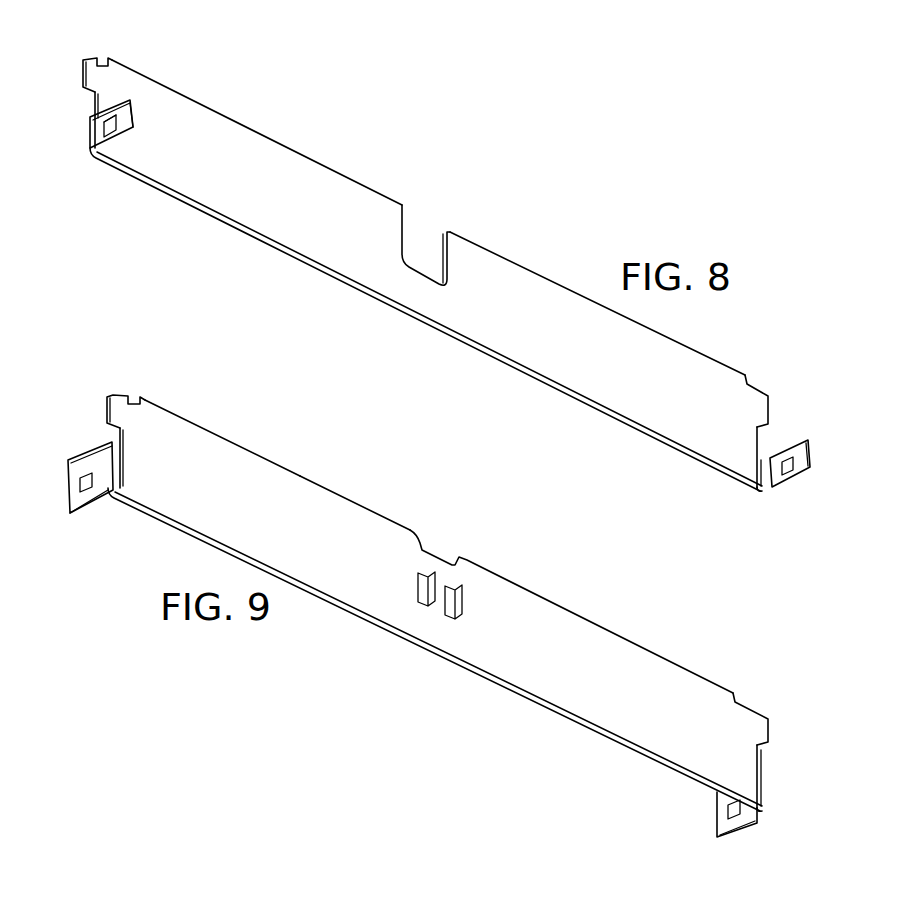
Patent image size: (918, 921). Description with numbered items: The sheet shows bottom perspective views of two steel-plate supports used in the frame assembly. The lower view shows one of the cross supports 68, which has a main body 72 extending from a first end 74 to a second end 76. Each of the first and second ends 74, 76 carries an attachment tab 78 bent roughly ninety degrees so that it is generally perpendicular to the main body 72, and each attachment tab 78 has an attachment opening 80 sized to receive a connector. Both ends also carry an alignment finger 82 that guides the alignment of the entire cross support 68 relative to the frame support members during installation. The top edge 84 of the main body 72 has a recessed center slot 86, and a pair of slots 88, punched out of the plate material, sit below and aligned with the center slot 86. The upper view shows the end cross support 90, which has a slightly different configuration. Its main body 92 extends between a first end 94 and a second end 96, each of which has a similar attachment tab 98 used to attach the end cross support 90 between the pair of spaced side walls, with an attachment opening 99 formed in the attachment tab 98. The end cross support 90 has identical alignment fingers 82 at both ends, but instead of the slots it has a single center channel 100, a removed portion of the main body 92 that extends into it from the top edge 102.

In FIG. 9, the cross support 68 is at (542, 582).
In FIG. 9, the main body 72 is at (240, 463).
In FIG. 9, the first end 74 is at (110, 427).
In FIG. 9, the second end 76 is at (763, 775).
In FIG. 9, the attachment tab 78 is at (95, 513).
In FIG. 9, the attachment opening 80 is at (72, 485).
In FIG. 8, the alignment finger 82 is at (100, 66).
In FIG. 9, the alignment finger 82 is at (122, 405).
In FIG. 9, the top edge 84 is at (345, 496).
In FIG. 9, the recessed center slot 86 is at (442, 558).
In FIG. 9, the slots 88 is at (415, 588).
In FIG. 8, the end cross support 90 is at (474, 203).
In FIG. 8, the main body 92 is at (290, 168).
In FIG. 8, the first end 94 is at (93, 108).
In FIG. 8, the second end 96 is at (760, 437).
In FIG. 8, the attachment tab 98 is at (133, 118).
In FIG. 8, the attachment opening 99 is at (90, 123).
In FIG. 8, the center channel 100 is at (423, 218).
In FIG. 8, the top edge 102 is at (538, 267).